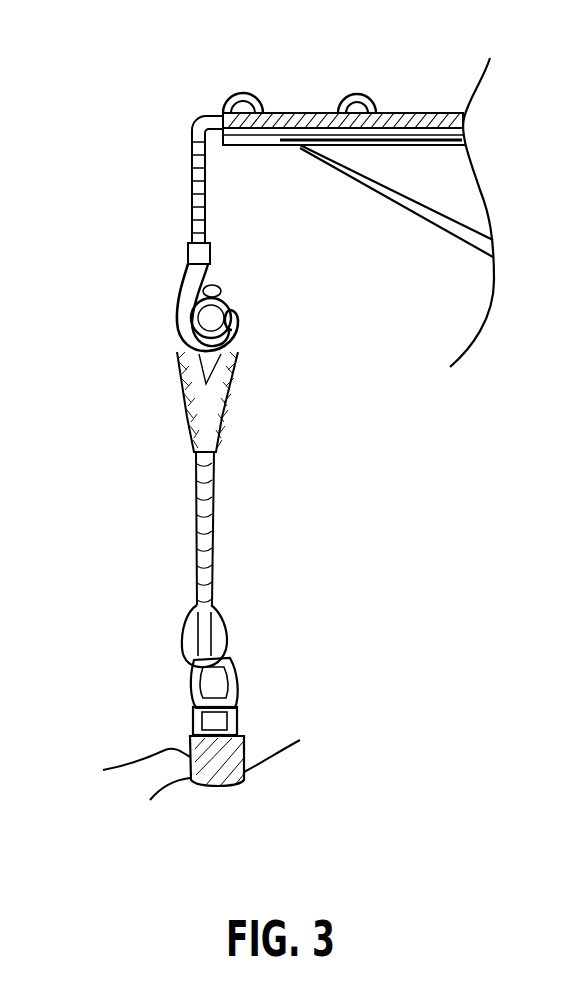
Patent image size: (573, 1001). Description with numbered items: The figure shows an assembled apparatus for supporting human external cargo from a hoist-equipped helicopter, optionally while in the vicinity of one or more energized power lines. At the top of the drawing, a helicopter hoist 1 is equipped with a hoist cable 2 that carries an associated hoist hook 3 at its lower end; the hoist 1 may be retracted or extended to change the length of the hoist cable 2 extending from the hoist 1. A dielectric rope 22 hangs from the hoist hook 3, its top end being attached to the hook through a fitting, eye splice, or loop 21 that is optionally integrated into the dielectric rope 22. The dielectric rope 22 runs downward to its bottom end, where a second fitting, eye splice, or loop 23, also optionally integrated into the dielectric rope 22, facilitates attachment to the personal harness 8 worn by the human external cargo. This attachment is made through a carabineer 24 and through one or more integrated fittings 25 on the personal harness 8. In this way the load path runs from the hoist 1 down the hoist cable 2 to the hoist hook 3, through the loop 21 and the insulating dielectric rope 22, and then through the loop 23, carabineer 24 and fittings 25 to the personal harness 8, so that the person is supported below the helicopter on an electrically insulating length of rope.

The helicopter hoist 1 is at (270, 147).
The hoist cable 2 is at (395, 110).
The hoist hook 3 is at (172, 297).
The personal harness 8 is at (172, 768).
The fitting, eye splice, or loop 21 is at (238, 360).
The dielectric rope 22 is at (213, 497).
The fitting, eye splice, or loop 23 is at (223, 613).
The carabineer 24 is at (235, 670).
The integrated fittings 25 is at (240, 714).